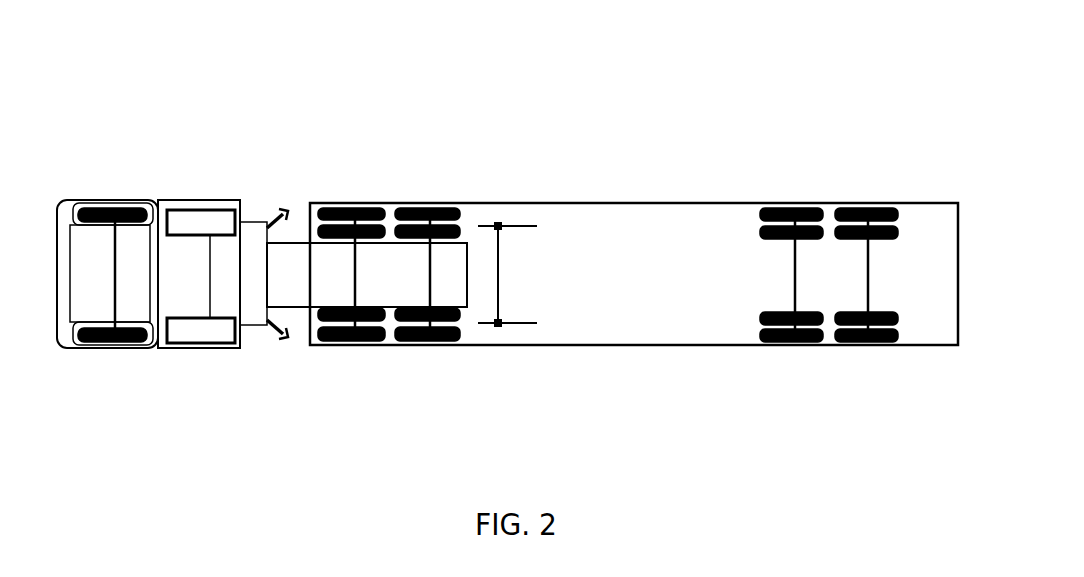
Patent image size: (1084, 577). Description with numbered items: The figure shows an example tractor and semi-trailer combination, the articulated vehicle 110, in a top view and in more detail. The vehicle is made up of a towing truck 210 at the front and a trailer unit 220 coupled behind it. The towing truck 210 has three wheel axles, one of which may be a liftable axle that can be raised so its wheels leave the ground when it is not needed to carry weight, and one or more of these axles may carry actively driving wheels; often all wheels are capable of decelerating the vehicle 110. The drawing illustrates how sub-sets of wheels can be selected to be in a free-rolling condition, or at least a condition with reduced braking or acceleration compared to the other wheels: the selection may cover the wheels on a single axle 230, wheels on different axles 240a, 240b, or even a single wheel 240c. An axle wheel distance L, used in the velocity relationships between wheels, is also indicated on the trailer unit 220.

The articulated vehicle 110 is at (113, 75).
The towing truck 210 is at (468, 355).
The trailer unit 220 is at (958, 195).
The single axle 230 is at (437, 278).
The wheels on different axles 240a is at (101, 214).
The wheels on different axles 240b is at (442, 333).
The single wheel 240c is at (782, 338).